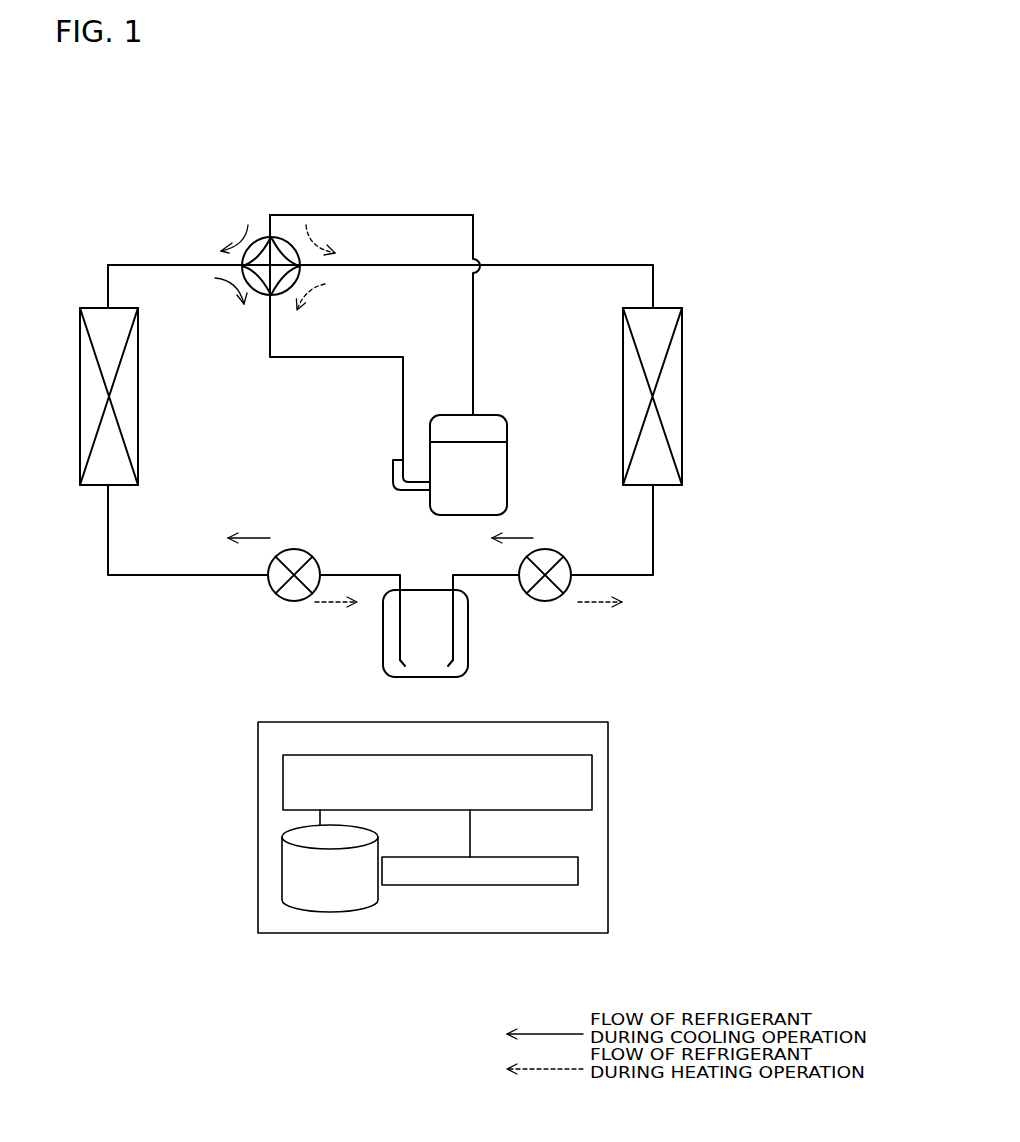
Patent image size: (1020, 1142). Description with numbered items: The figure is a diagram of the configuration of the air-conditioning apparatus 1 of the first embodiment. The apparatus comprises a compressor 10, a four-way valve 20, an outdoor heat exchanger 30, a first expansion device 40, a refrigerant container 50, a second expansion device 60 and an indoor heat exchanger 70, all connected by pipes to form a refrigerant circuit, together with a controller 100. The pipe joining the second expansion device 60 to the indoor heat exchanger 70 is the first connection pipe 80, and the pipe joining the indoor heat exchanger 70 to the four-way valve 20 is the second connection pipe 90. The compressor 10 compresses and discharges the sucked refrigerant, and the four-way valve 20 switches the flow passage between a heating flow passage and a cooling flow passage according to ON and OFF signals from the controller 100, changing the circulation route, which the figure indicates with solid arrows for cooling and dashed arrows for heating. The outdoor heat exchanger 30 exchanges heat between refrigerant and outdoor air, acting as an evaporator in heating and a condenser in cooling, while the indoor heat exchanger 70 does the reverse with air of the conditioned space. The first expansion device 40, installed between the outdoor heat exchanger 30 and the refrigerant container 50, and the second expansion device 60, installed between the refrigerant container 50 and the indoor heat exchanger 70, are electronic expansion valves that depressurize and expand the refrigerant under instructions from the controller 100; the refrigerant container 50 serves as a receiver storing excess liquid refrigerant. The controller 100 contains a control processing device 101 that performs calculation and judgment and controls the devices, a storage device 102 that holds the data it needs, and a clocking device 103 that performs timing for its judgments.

The air-conditioning apparatus 1 is at (487, 194).
The compressor 10 is at (507, 490).
The four-way valve 20 is at (262, 297).
The outdoor heat exchanger 30 is at (683, 343).
The first expansion device 40 is at (563, 555).
The refrigerant container 50 is at (468, 668).
The second expansion device 60 is at (307, 553).
The indoor heat exchanger 70 is at (138, 452).
The first connection pipe 80 is at (153, 573).
The second connection pipe 90 is at (135, 264).
The controller 100 is at (433, 850).
The control processing device 101 is at (532, 812).
The storage device 102 is at (358, 905).
The clocking device 103 is at (493, 887).